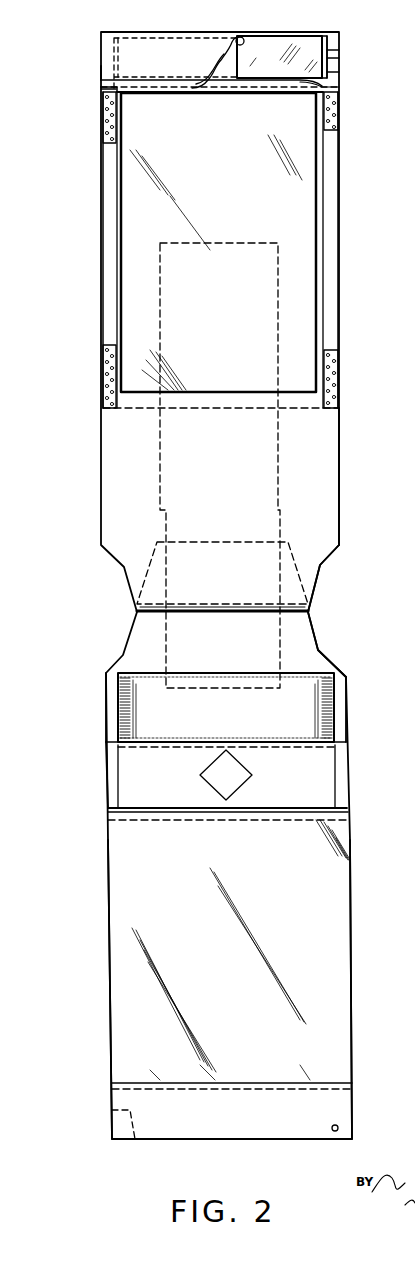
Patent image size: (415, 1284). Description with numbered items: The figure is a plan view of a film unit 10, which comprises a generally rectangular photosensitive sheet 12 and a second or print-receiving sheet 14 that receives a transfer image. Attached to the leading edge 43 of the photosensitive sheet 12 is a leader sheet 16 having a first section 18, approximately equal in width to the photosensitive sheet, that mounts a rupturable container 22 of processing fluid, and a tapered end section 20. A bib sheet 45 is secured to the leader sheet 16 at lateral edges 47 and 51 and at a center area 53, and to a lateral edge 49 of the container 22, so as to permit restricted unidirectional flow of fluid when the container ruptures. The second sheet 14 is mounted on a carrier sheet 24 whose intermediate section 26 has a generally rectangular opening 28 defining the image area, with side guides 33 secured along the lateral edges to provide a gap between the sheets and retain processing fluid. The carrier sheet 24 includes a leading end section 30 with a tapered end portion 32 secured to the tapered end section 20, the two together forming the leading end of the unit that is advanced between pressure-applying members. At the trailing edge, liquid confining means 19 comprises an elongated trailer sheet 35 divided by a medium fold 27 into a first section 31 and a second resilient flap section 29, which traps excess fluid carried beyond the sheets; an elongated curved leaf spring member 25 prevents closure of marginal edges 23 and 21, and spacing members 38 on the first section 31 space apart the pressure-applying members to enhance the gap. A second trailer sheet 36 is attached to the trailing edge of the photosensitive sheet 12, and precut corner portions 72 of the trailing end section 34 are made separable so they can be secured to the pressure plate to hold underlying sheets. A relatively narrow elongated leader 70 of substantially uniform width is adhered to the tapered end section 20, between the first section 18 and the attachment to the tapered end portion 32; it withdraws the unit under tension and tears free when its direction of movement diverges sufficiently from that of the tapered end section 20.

The film unit 10 is at (96, 500).
The photosensitive sheet 12 is at (125, 907).
The second or print-receiving sheet 14 is at (298, 203).
The leader sheet 16 is at (347, 688).
The first section 18 is at (350, 811).
The liquid confining means 19 is at (331, 30).
The tapered end section 20 is at (303, 637).
The marginal edge 21 is at (327, 87).
The rupturable container 22 is at (148, 705).
The marginal edge 23 is at (102, 88).
The carrier sheet 24 is at (341, 480).
The leaf spring member 25 is at (270, 46).
The intermediate section 26 is at (322, 436).
The medium fold 27 is at (237, 40).
The rectangular opening 28 is at (314, 148).
The second resilient flap section 29 is at (150, 40).
The leading end section 30 is at (338, 562).
The first section 31 is at (326, 36).
The tapered end portion 32 is at (137, 584).
The side guides 33 is at (104, 205).
The trailing end section 34 is at (236, 250).
The trailer sheet 35 is at (101, 68).
The second trailer sheet 36 is at (332, 1106).
The spacing members 38 is at (340, 51).
The leading edge 43 is at (333, 818).
The bib sheet 45 is at (348, 742).
The lateral edge 47 is at (340, 780).
The lateral edge 49 is at (118, 748).
The lateral edge 51 is at (108, 785).
The center area 53 is at (232, 775).
The leader 70 is at (160, 467).
The corner portions 72 is at (112, 1120).